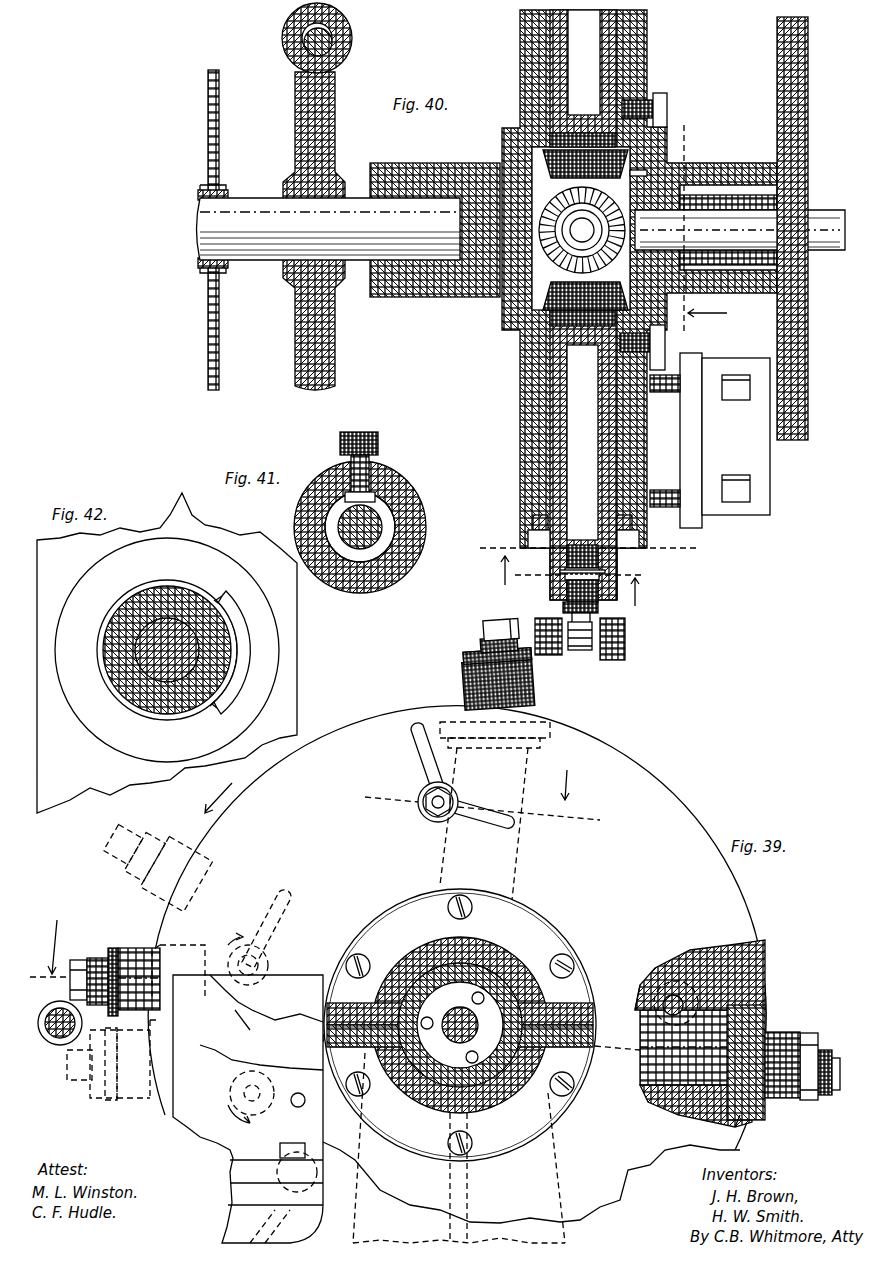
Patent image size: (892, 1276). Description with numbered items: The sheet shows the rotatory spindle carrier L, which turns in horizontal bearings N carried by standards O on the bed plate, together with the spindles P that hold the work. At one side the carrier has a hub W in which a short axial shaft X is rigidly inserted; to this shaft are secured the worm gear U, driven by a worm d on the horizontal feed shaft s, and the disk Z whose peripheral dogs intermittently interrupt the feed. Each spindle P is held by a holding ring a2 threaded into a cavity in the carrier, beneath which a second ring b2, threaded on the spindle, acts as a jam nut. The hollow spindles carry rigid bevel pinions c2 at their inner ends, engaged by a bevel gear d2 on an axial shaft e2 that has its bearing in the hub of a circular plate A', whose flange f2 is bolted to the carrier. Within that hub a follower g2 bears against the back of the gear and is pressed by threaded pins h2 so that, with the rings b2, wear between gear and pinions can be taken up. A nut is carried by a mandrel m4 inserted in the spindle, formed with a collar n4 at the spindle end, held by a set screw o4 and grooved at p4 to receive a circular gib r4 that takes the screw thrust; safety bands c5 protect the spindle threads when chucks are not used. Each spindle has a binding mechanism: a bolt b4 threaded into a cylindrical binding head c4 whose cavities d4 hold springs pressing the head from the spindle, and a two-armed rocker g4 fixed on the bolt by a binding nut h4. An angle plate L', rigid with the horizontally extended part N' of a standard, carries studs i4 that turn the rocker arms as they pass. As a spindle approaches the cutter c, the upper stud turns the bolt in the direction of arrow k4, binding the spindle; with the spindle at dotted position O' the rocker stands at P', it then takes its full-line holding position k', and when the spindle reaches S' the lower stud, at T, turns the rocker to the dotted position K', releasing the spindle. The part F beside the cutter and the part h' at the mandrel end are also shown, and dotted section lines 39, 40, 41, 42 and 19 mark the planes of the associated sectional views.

In FIG. 40, the feed shaft s is at (312, 38).
In FIG. 40, the worm d is at (341, 42).
In FIG. 40, the disk Z is at (210, 122).
In FIG. 40, the worm gear U is at (296, 130).
In FIG. 40, the axial shaft X is at (329, 229).
In FIG. 40, the hub W is at (430, 292).
In FIG. 40, the spindle P is at (555, 305).
In FIG. 41, the spindle P is at (365, 527).
In FIG. 42, the spindle P is at (167, 643).
In FIG. 39, the spindle P is at (423, 866).
In FIG. 40, the spindle carrier L is at (634, 279).
In FIG. 42, the spindle carrier L is at (167, 653).
In FIG. 39, the spindle carrier L is at (457, 964).
In FIG. 40, the bevel pinion c2 is at (556, 200).
In FIG. 39, the bevel pinion c2 is at (478, 1025).
In FIG. 40, the circular flange f2 is at (660, 93).
In FIG. 39, the circular flange f2 is at (541, 920).
In FIG. 40, the circular plate A' is at (776, 228).
In FIG. 39, the circular plate A' is at (460, 1067).
In FIG. 40, the section line 39 is at (705, 227).
In FIG. 40, the bevel gear d2 is at (640, 172).
In FIG. 40, the follower g2 is at (645, 203).
In FIG. 39, the follower g2 is at (460, 1025).
In FIG. 40, the threaded pins h2 is at (750, 204).
In FIG. 39, the threaded pins h2 is at (428, 1028).
In FIG. 40, the axial shaft e2 is at (826, 214).
In FIG. 40, the studs i4 is at (664, 392).
In FIG. 39, the studs i4 is at (253, 1064).
In FIG. 40, the angle plate L' is at (725, 440).
In FIG. 39, the angle plate L' is at (248, 1109).
In FIG. 40, the second ring b2 is at (533, 522).
In FIG. 42, the second ring b2 is at (232, 652).
In FIG. 39, the second ring b2 is at (737, 1125).
In FIG. 40, the section line 42 is at (591, 545).
In FIG. 40, the section line 41 is at (585, 581).
In FIG. 40, the holding ring a2 is at (552, 552).
In FIG. 42, the holding ring a2 is at (167, 650).
In FIG. 39, the holding ring a2 is at (766, 1026).
In FIG. 40, the mandrel m4 is at (582, 552).
In FIG. 41, the mandrel m4 is at (364, 545).
In FIG. 42, the mandrel m4 is at (150, 658).
In FIG. 39, the mandrel m4 is at (486, 643).
In FIG. 40, the circumferential groove p4 is at (600, 578).
In FIG. 41, the circumferential groove p4 is at (388, 520).
In FIG. 40, the safety bands c5 is at (559, 626).
In FIG. 39, the safety bands c5 is at (530, 668).
In FIG. 40, the cutter c is at (603, 660).
In FIG. 39, the cutter c is at (58, 1045).
In FIG. 41, the set screw o4 is at (378, 440).
In FIG. 41, the circular gib r4 is at (348, 497).
In FIG. 39, the rocker g4 is at (420, 745).
In FIG. 39, the binding nut h4 is at (450, 796).
In FIG. 39, the bolt b4 is at (436, 810).
In FIG. 39, the section line 19 is at (490, 803).
In FIG. 39, the bearings N is at (460, 1023).
In FIG. 39, the standards O is at (467, 982).
In FIG. 39, the spindle position O' is at (164, 891).
In FIG. 39, the rocker position P' is at (275, 925).
In FIG. 39, the arrow k4 is at (243, 951).
In FIG. 39, the pin k' is at (241, 1018).
In FIG. 39, the rocker position T is at (305, 1099).
In FIG. 39, the horizontally-extended part N' is at (276, 1172).
In FIG. 39, the rocker position K' is at (275, 1224).
In FIG. 39, the spindle position S' is at (113, 1067).
In FIG. 39, the threaded end F is at (58, 1006).
In FIG. 39, the nut h' is at (294, 800).
In FIG. 39, the cylindrical cavities d4 is at (636, 1003).
In FIG. 39, the binding head c4 is at (676, 993).
In FIG. 39, the collar n4 is at (470, 655).
In FIG. 39, the section line 40 is at (335, 991).